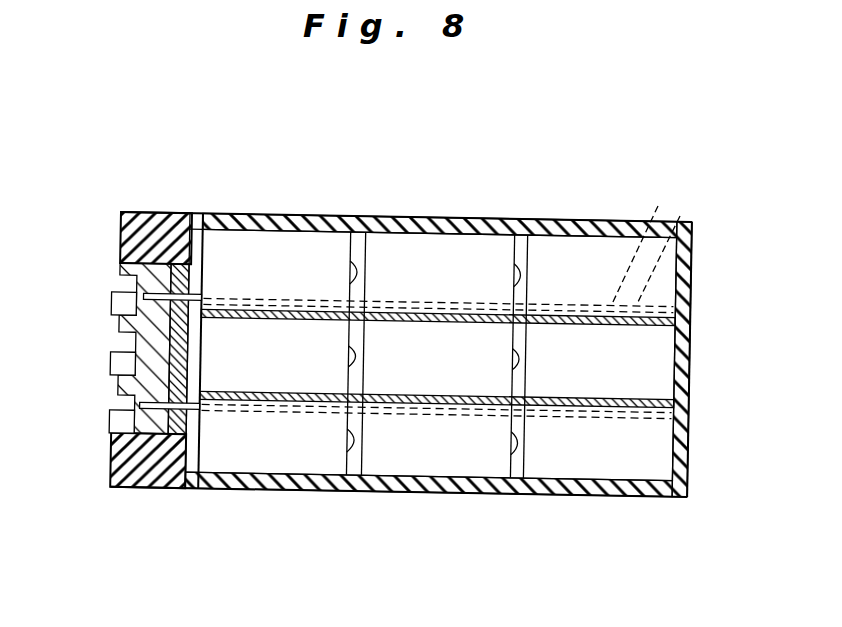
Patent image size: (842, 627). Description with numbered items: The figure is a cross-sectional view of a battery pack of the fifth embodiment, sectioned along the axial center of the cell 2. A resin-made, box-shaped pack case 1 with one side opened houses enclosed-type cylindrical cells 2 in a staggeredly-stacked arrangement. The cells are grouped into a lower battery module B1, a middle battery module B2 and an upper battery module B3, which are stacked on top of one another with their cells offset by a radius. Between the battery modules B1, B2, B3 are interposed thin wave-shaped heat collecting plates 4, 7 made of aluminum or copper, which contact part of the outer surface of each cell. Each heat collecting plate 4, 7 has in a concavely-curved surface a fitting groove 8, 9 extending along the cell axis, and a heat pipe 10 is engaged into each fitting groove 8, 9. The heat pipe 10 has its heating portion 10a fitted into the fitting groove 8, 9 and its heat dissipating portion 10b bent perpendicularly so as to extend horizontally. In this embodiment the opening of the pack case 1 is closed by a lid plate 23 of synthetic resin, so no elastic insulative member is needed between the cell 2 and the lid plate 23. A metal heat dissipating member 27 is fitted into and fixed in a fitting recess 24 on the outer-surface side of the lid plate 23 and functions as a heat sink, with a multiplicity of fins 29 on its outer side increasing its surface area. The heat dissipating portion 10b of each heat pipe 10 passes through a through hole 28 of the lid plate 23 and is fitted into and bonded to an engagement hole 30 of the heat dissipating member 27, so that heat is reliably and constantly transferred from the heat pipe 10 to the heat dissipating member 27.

The pack case 1 is at (468, 216).
The cell 2 is at (398, 265).
The heat collecting plate 4 is at (445, 455).
The heat collecting plate 7 is at (555, 300).
The fitting groove 8 is at (325, 412).
The fitting groove 9 is at (441, 302).
The heat pipe 10 is at (690, 222).
The heating portion 10a is at (630, 528).
The heat dissipating portion 10b is at (183, 213).
The lid plate 23 is at (121, 231).
The fitting recess 24 is at (138, 363).
The heat dissipating member 27 is at (140, 323).
The through hole 28 is at (205, 307).
The fin 29 is at (126, 304).
The engagement hole 30 is at (134, 212).
The lower battery module B1 is at (688, 444).
The middle battery module B2 is at (688, 352).
The upper battery module B3 is at (688, 279).